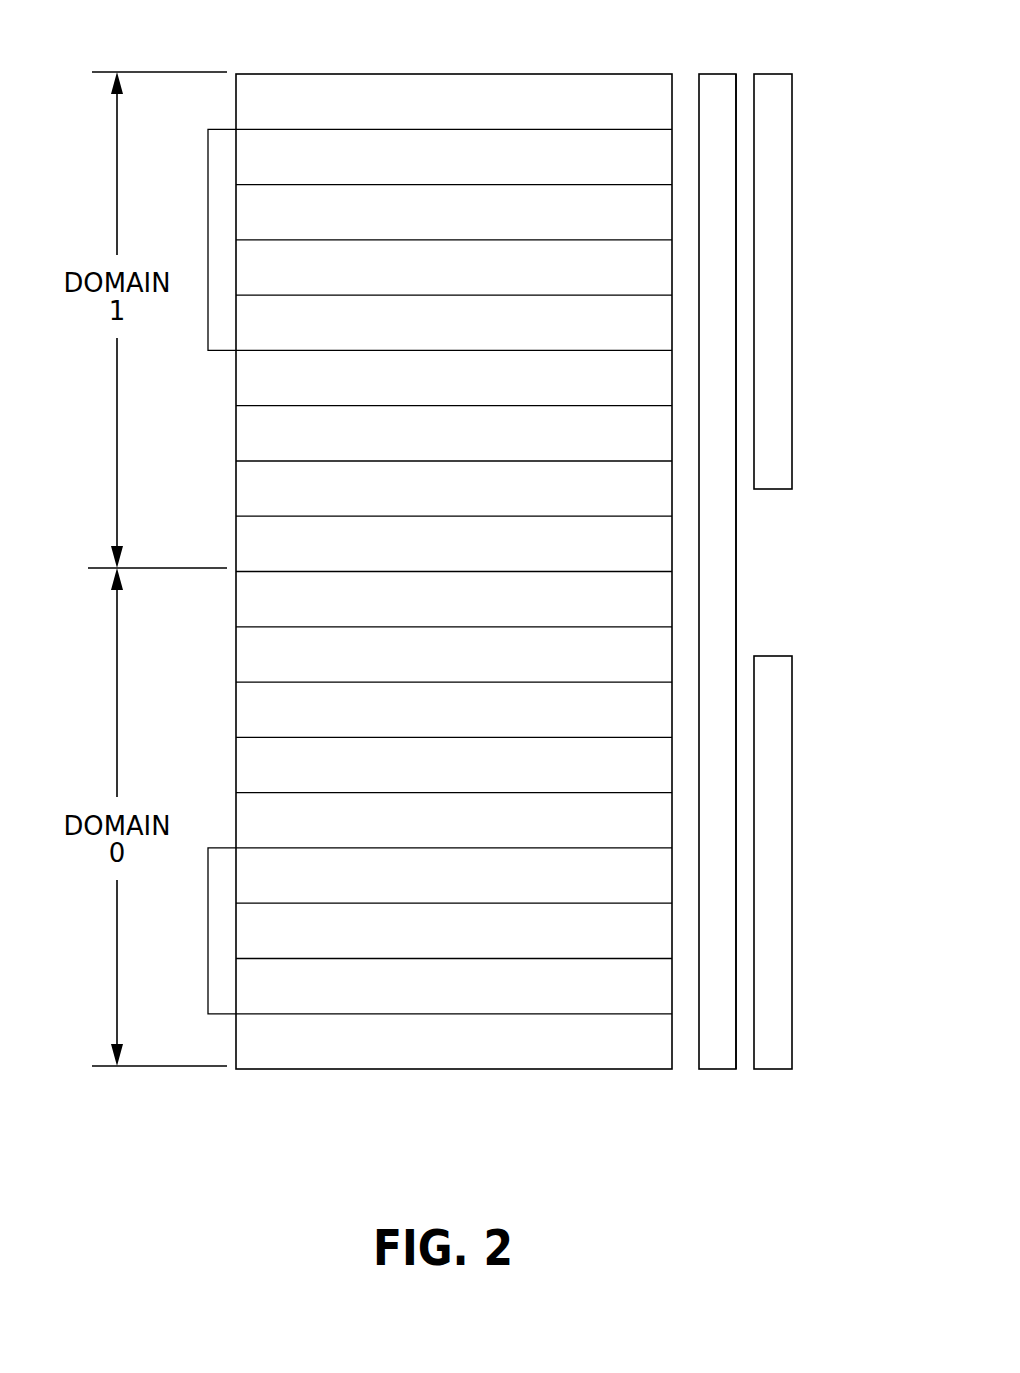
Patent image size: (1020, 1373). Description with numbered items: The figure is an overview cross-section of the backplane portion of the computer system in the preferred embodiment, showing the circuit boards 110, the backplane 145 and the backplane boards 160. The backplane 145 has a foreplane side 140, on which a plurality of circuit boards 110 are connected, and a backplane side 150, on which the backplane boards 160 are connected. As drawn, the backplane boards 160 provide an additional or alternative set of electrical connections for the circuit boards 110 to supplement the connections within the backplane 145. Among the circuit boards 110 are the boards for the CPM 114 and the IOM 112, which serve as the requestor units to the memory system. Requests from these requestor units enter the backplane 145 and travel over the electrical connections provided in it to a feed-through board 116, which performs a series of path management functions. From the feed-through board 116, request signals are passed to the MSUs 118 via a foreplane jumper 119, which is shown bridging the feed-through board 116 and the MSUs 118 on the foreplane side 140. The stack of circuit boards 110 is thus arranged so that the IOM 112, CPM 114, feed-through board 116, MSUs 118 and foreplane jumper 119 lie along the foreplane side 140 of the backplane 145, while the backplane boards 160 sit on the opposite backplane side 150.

The circuit boards 110 is at (440, 52).
The IOM 112 is at (236, 537).
The CPM 114 is at (250, 378).
The feed-through board 116 is at (252, 322).
The MSU 118 is at (247, 267).
The foreplane jumper 119 is at (220, 126).
The foreplane side 140 is at (697, 1050).
The backplane 145 is at (750, 567).
The backplane side 150 is at (735, 1045).
The backplane boards 160 is at (792, 322).